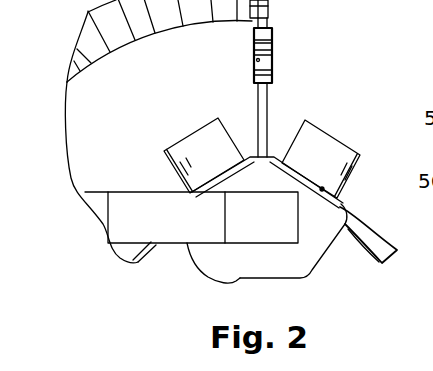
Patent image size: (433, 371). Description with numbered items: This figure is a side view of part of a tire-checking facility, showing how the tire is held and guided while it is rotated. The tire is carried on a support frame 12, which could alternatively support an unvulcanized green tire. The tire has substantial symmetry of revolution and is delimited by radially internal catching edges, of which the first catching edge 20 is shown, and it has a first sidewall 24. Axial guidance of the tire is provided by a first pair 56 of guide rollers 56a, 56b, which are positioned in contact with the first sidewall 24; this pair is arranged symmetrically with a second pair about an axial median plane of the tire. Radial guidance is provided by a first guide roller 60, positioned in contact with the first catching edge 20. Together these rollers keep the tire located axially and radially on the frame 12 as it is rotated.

The support frame 12 is at (130, 216).
The first radially internal catching edge 20 is at (147, 250).
The first sidewall 24 is at (97, 110).
The first pair of guide rollers 56 is at (287, 100).
The guide roller 56a is at (322, 152).
The guide roller 56b is at (200, 153).
The first guide roller 60 is at (200, 270).